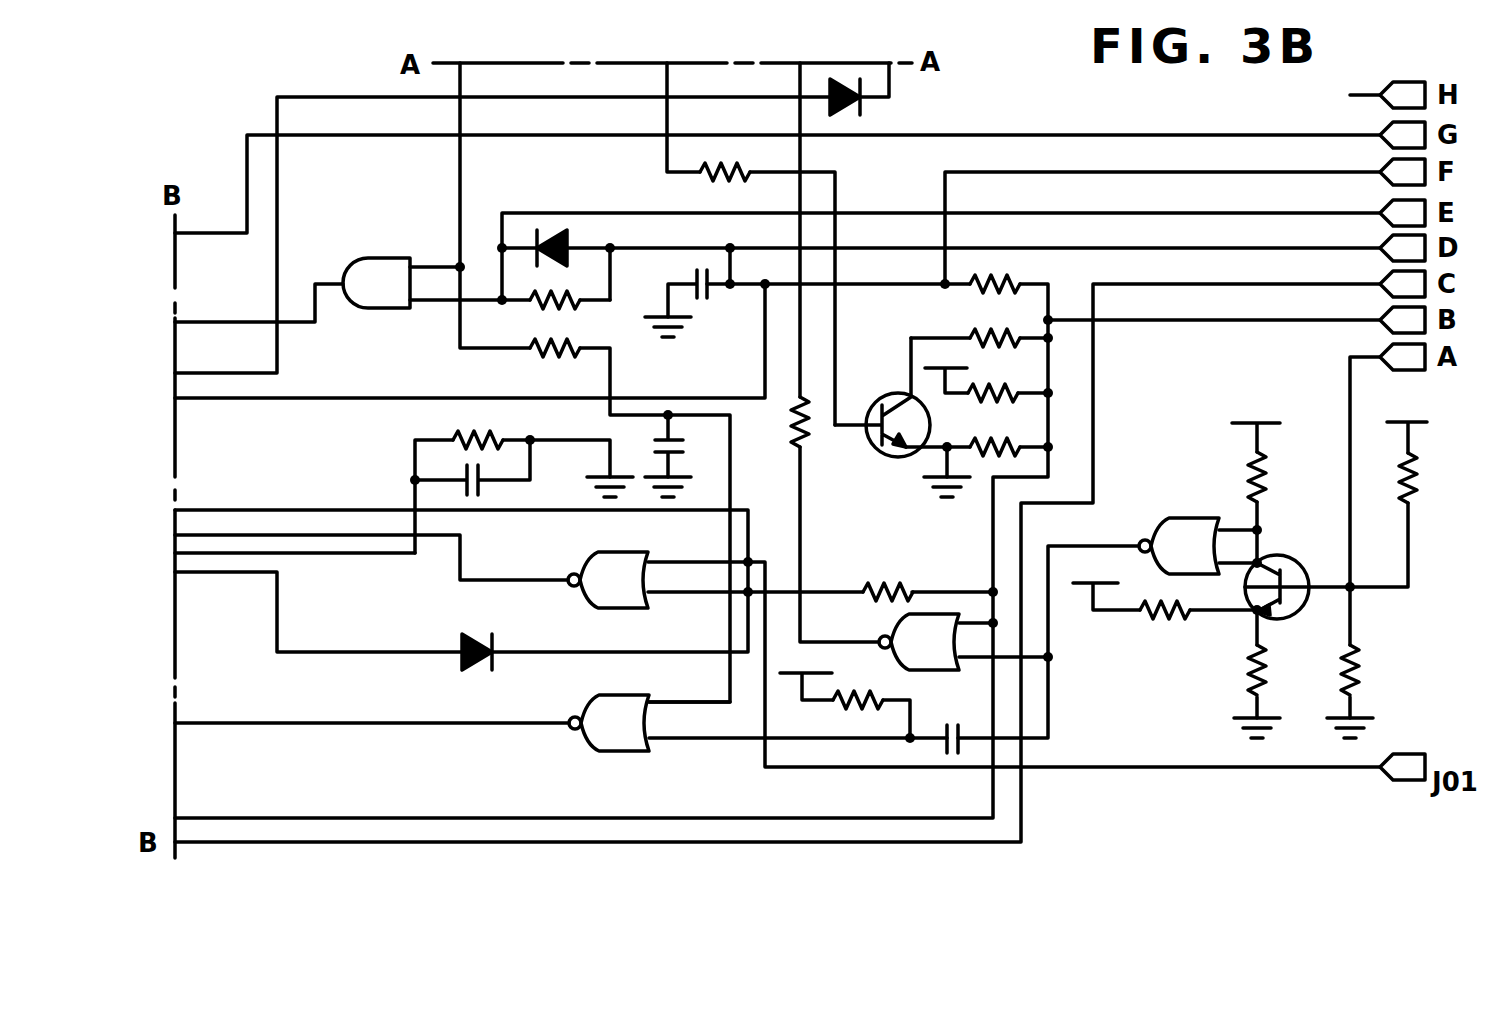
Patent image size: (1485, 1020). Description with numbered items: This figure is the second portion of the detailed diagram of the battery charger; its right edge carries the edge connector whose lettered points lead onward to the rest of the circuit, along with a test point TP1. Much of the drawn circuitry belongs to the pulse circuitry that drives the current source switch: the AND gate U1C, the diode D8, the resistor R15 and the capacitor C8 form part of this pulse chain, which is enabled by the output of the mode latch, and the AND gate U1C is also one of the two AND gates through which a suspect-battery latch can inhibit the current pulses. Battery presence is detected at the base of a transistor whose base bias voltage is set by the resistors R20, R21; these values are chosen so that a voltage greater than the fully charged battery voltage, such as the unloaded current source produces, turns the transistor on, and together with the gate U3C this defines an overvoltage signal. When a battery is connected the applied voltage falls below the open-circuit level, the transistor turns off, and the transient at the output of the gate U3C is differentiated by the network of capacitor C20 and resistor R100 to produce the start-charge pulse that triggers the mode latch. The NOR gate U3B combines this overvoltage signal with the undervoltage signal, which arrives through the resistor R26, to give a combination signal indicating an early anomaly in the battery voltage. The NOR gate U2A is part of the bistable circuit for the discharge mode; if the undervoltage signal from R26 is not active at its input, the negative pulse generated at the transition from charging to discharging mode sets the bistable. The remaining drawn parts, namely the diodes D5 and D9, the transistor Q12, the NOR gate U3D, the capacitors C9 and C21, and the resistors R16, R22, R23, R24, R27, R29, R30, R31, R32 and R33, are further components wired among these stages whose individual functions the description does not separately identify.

The AND gate U1C is at (362, 268).
The resistor R15 is at (524, 314).
The diode D8 is at (567, 247).
The diode D5 is at (862, 112).
The resistor R29 is at (710, 176).
The capacitor C8 is at (708, 294).
The resistor R33 is at (997, 287).
The resistor R30 is at (978, 338).
The resistor R31 is at (974, 392).
The resistor R32 is at (1000, 442).
The transistor Q12 is at (884, 398).
The resistor R27 is at (804, 446).
The capacitor C21 is at (660, 446).
The resistor R16 is at (458, 440).
The capacitor C9 is at (480, 481).
The NOR gate U2A is at (592, 559).
The diode D9 is at (466, 642).
The resistor R26 is at (896, 548).
The NOR gate U3B is at (940, 655).
The resistor R100 is at (866, 702).
The capacitor C20 is at (940, 746).
The NOR gate U3D is at (612, 735).
The gate U3C is at (1181, 530).
The resistor R24 is at (1265, 470).
The resistor R23 is at (1150, 602).
The resistor R22 is at (1251, 666).
The resistor R20 is at (1336, 678).
The resistor R21 is at (1412, 488).
The test point TP1 is at (1432, 759).